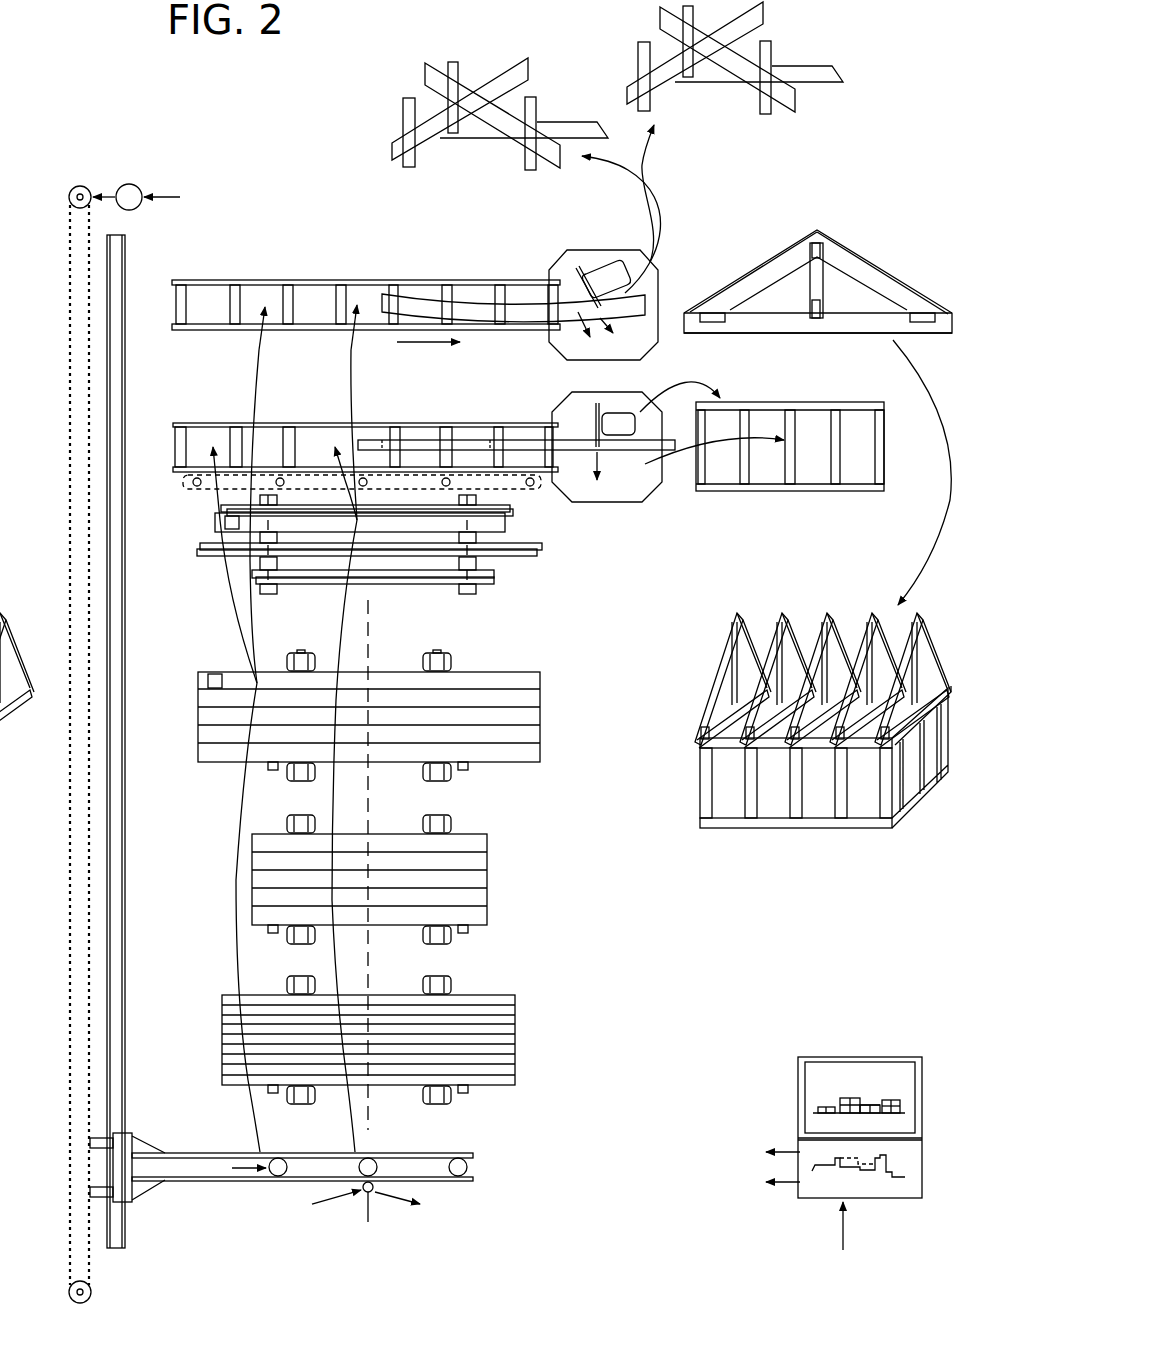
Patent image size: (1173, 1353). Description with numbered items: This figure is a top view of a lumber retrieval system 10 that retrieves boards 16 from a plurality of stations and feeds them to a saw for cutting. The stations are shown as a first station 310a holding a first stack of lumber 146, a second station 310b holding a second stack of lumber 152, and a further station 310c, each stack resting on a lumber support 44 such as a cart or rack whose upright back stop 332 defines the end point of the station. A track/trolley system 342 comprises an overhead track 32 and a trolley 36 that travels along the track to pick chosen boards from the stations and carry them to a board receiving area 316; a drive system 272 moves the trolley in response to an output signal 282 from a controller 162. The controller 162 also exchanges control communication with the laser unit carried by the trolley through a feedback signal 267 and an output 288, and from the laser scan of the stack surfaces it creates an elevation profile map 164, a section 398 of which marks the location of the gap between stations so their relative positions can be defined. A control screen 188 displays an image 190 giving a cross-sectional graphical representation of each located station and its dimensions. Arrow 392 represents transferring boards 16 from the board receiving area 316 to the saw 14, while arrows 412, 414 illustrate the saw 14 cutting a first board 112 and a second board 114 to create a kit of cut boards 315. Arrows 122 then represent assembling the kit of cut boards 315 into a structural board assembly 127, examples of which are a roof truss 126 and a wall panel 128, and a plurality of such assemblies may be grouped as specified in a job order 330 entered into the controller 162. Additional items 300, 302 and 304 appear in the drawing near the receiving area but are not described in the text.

The lumber retrieval system 10 is at (289, 250).
The saw 14 is at (578, 278).
The boards 16 is at (425, 295).
The track 32 is at (125, 982).
The trolley 36 is at (292, 1183).
The lumber support 44 is at (555, 702).
The first board 112 is at (730, 283).
The second board 114 is at (805, 277).
The arrows 122 is at (827, 241).
The roof truss 126 is at (885, 268).
The structural board assembly 127 is at (862, 330).
The wall panel 128 is at (806, 491).
The first stack of lumber 146 is at (198, 717).
The second stack of lumber 152 is at (250, 880).
The controller 162 is at (832, 1134).
The elevation profile map 164 is at (885, 1160).
The control screen 188 is at (810, 1075).
The image 190 is at (853, 1098).
The feedback signal 267 is at (843, 1224).
The drive system 272 is at (80, 182).
The output signal 282 is at (163, 200).
The output 288 is at (787, 1185).
The board 300 is at (470, 312).
The board segment 302 is at (514, 336).
The carrier 304 is at (182, 482).
The first station 310a is at (555, 745).
The second station 310b is at (512, 903).
The lumber stack 310c is at (530, 1078).
The kit of cut boards 315 is at (800, 63).
The board receiving area 316 is at (307, 330).
The job order 330 is at (700, 672).
The back stop 332 is at (470, 767).
The track/trolley system 342 is at (132, 1152).
The arrow 392 is at (422, 346).
The section 398 is at (872, 1170).
The arrow 412 is at (615, 328).
The arrow 414 is at (580, 330).